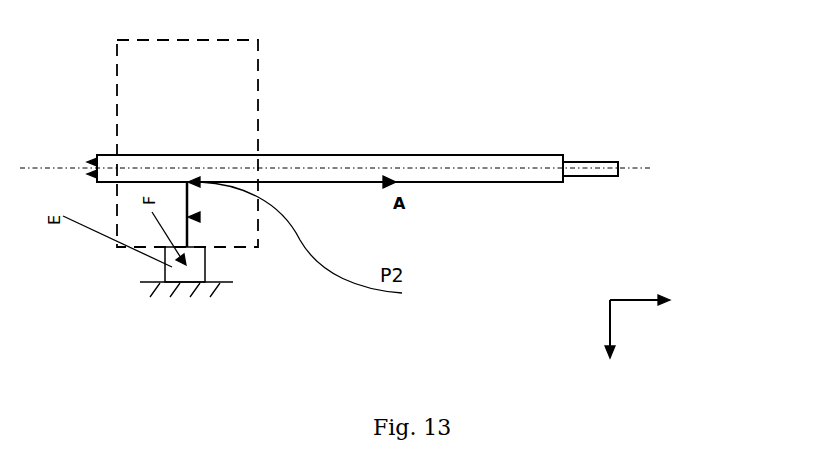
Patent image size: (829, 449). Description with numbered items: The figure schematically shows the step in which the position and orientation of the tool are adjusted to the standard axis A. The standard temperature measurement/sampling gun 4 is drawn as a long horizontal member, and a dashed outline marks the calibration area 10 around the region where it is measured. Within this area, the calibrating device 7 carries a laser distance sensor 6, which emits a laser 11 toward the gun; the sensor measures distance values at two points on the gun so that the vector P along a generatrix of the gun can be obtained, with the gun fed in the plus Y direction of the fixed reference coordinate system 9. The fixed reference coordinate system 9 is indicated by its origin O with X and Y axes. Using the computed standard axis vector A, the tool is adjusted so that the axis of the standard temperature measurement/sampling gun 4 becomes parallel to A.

The standard temperature measurement/sampling gun 4 is at (485, 164).
The laser distance sensor 6 is at (204, 270).
The calibrating device 7 is at (164, 288).
The fixed reference coordinate system 9 is at (611, 299).
The calibration area 10 is at (257, 120).
The laser 11 is at (200, 217).